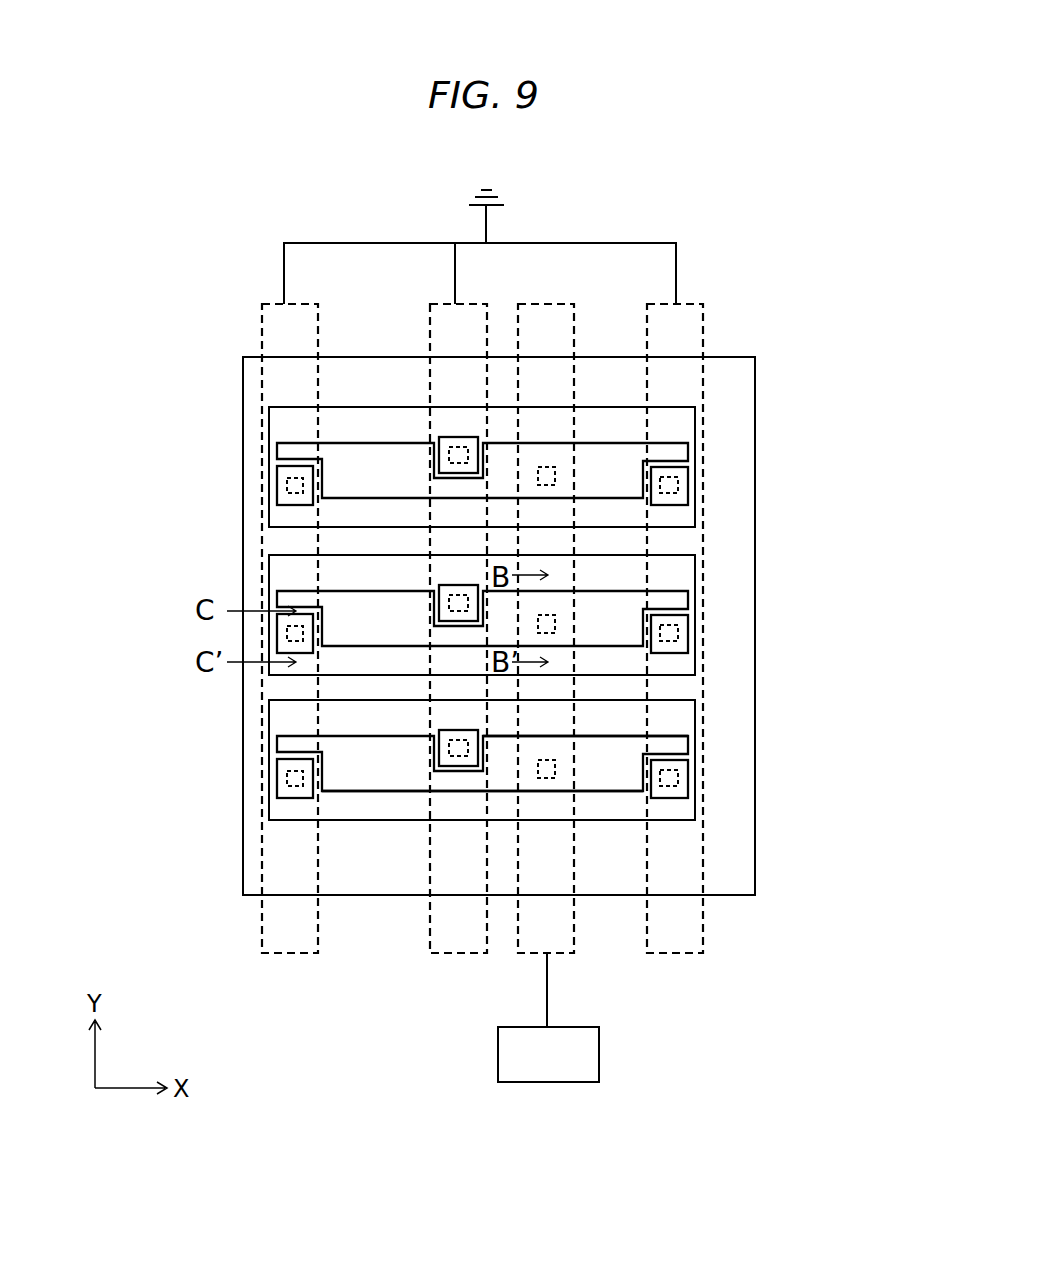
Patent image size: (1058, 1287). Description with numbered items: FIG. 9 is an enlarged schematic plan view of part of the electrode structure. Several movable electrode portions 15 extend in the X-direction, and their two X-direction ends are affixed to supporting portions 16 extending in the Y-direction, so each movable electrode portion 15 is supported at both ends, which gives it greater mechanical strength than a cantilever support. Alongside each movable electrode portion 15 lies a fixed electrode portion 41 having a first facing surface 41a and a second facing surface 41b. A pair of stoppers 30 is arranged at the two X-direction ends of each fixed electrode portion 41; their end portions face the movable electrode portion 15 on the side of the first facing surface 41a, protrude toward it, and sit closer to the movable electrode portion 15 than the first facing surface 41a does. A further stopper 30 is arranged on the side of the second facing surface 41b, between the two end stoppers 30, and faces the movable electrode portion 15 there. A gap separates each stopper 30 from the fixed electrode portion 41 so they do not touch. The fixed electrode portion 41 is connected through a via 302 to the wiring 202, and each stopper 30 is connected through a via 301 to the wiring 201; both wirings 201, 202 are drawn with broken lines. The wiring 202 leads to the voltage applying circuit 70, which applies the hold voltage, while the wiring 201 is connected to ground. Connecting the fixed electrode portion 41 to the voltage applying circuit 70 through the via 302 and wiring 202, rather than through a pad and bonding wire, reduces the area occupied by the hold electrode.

The movable electrode portion 15 is at (622, 372).
The supporting portion 16 is at (255, 730).
The stopper 30 is at (446, 437).
The fixed electrode portion 41 is at (346, 470).
The first facing surface 41a is at (400, 790).
The second facing surface 41b is at (603, 727).
The voltage applying circuit 70 is at (600, 1067).
The wiring 201 is at (293, 955).
The wiring 202 is at (548, 304).
The via 301 is at (285, 487).
The via 302 is at (555, 478).